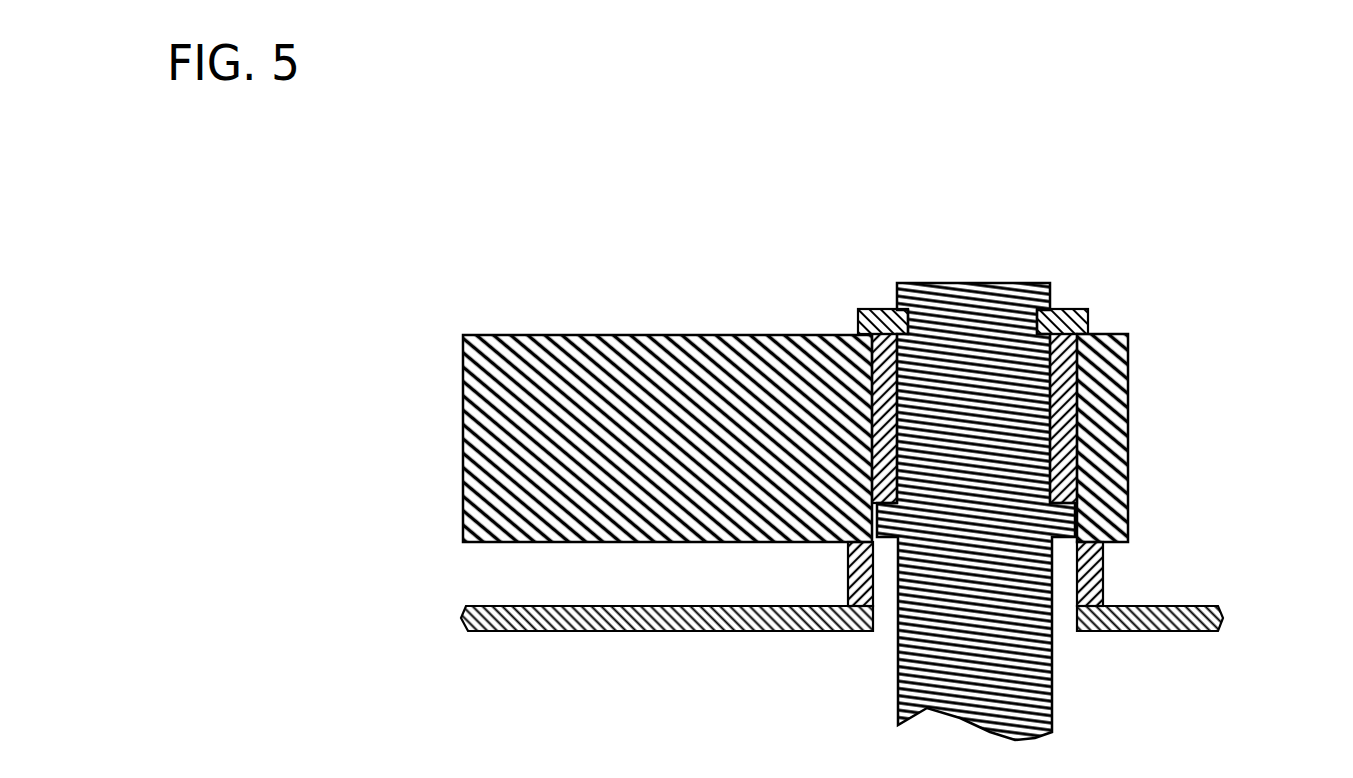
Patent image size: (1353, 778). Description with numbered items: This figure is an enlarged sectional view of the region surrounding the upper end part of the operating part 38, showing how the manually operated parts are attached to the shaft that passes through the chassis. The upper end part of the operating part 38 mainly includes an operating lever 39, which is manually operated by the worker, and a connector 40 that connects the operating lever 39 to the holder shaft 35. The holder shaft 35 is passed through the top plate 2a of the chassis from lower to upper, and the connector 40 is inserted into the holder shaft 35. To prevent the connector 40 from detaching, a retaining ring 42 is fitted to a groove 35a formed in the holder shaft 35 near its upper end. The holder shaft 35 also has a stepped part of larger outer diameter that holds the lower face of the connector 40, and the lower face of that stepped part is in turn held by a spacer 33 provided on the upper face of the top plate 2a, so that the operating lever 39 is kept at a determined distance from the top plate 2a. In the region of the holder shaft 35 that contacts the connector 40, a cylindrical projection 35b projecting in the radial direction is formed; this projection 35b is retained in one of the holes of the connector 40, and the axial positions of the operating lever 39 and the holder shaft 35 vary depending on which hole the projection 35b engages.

The operating part 38 is at (587, 207).
The operating lever 39 is at (462, 392).
The connector 40 is at (1072, 362).
The retaining ring 42 is at (1080, 310).
The holder shaft 35 is at (970, 312).
The groove 35a is at (1035, 312).
The projection 35b is at (1085, 512).
The spacer 33 is at (1103, 570).
The top plate 2a is at (506, 597).